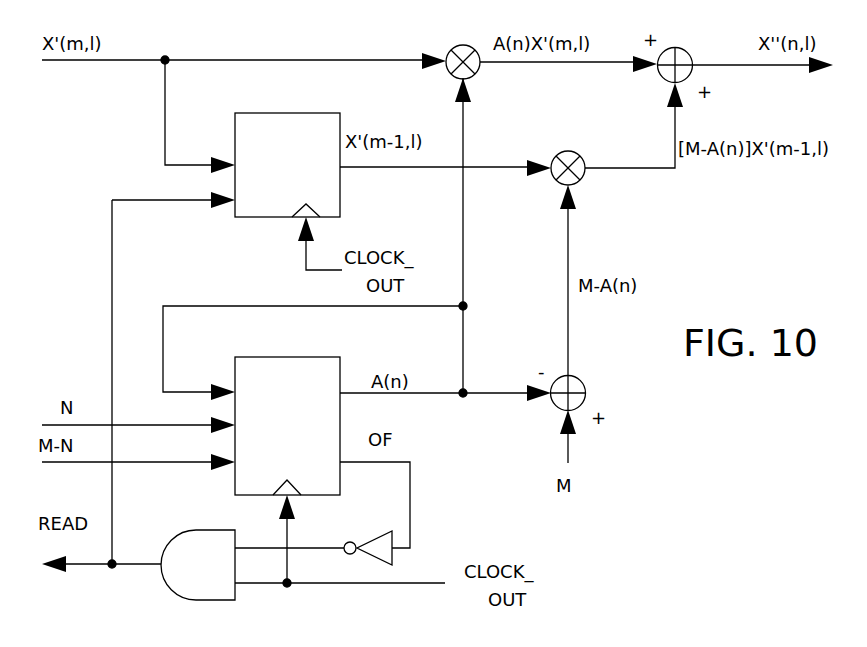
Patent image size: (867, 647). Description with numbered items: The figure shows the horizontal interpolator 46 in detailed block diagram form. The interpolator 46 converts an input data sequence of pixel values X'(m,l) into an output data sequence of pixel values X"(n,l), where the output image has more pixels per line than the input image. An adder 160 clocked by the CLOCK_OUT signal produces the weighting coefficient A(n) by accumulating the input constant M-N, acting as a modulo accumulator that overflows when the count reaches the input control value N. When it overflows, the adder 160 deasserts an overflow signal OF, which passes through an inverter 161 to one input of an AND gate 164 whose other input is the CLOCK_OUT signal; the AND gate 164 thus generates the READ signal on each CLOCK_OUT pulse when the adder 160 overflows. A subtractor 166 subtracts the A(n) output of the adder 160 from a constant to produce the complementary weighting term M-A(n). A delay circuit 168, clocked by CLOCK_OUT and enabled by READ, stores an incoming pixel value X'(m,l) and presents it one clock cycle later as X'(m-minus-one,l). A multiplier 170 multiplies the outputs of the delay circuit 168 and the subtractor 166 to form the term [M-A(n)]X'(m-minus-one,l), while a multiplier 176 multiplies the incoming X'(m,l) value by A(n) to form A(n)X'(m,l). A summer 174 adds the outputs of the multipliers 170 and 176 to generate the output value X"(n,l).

The multiplier 176 is at (452, 51).
The delay circuit 168 is at (291, 113).
The summer 174 is at (688, 53).
The multiplier 170 is at (580, 156).
The subtractor 166 is at (585, 388).
The adder 160 is at (287, 426).
The inverter 161 is at (368, 546).
The AND gate 164 is at (198, 565).
The horizontal interpolator 46 is at (655, 550).